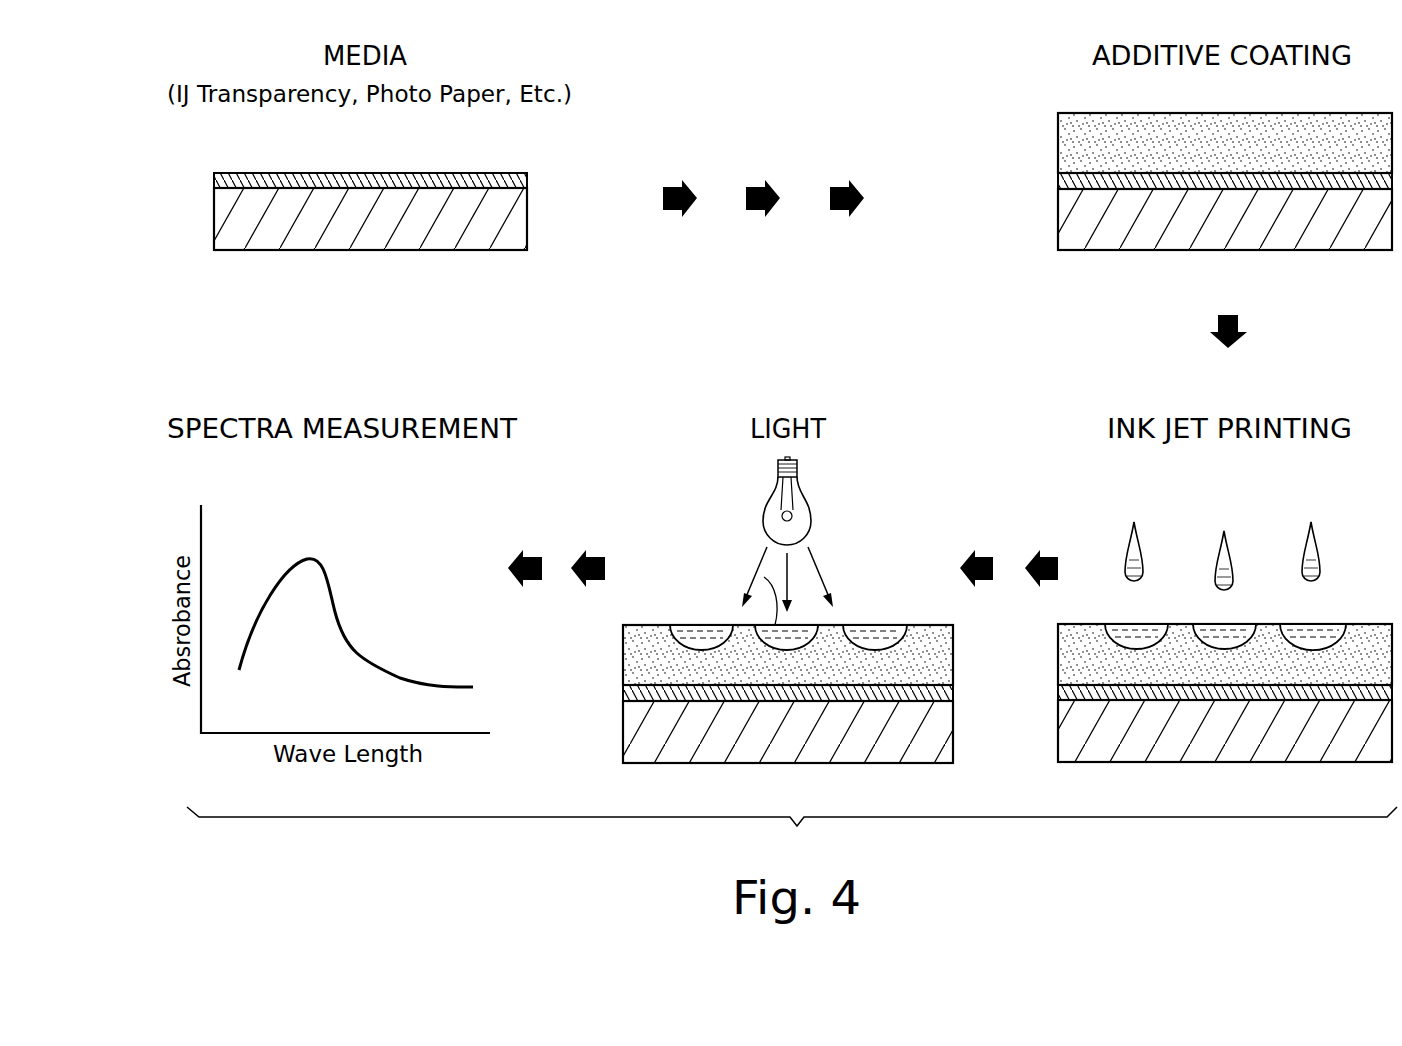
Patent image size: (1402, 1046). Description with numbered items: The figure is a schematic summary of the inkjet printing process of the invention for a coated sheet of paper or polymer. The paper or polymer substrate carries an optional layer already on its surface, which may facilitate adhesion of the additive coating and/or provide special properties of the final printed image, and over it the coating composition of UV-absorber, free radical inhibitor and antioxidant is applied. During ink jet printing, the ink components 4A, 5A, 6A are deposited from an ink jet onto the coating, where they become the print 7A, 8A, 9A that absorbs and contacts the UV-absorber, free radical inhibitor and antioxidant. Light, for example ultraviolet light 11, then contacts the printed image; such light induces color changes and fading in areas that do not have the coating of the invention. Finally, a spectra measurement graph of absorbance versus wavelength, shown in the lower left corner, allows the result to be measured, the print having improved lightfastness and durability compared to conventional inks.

The ink component 4A is at (1133, 524).
The ink component 5A is at (1223, 532).
The ink component 6A is at (1310, 524).
The print 7A is at (703, 625).
The print 8A is at (752, 566).
The print 9A is at (865, 625).
The ultraviolet light 11 is at (773, 498).